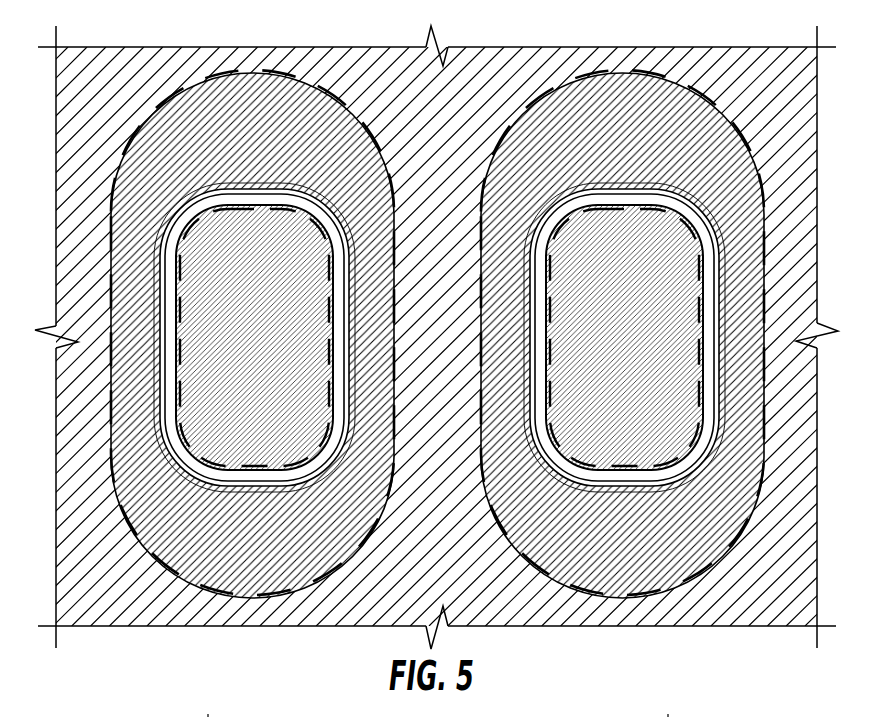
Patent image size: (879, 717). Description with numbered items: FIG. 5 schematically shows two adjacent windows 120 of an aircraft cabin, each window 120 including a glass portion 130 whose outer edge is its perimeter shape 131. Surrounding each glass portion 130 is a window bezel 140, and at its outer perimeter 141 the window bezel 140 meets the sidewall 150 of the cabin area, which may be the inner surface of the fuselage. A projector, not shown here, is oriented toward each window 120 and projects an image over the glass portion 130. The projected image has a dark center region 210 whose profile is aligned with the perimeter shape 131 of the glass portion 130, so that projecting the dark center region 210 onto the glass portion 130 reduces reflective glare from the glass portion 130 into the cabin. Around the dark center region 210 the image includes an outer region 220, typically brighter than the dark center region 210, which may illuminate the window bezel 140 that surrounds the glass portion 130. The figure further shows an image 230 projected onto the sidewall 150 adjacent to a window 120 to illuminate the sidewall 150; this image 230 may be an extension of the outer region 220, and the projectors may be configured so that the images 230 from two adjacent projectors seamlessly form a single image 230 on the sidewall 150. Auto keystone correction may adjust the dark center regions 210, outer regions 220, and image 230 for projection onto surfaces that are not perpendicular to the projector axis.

The window 120 is at (343, 310).
The glass portion 130 is at (262, 432).
The perimeter shape 131 is at (247, 474).
The window bezel 140 is at (208, 548).
The outer perimeter 141 is at (500, 115).
The sidewall 150 is at (452, 243).
The dark center region 210 is at (247, 310).
The outer region 220 is at (245, 124).
The image 230 is at (453, 552).